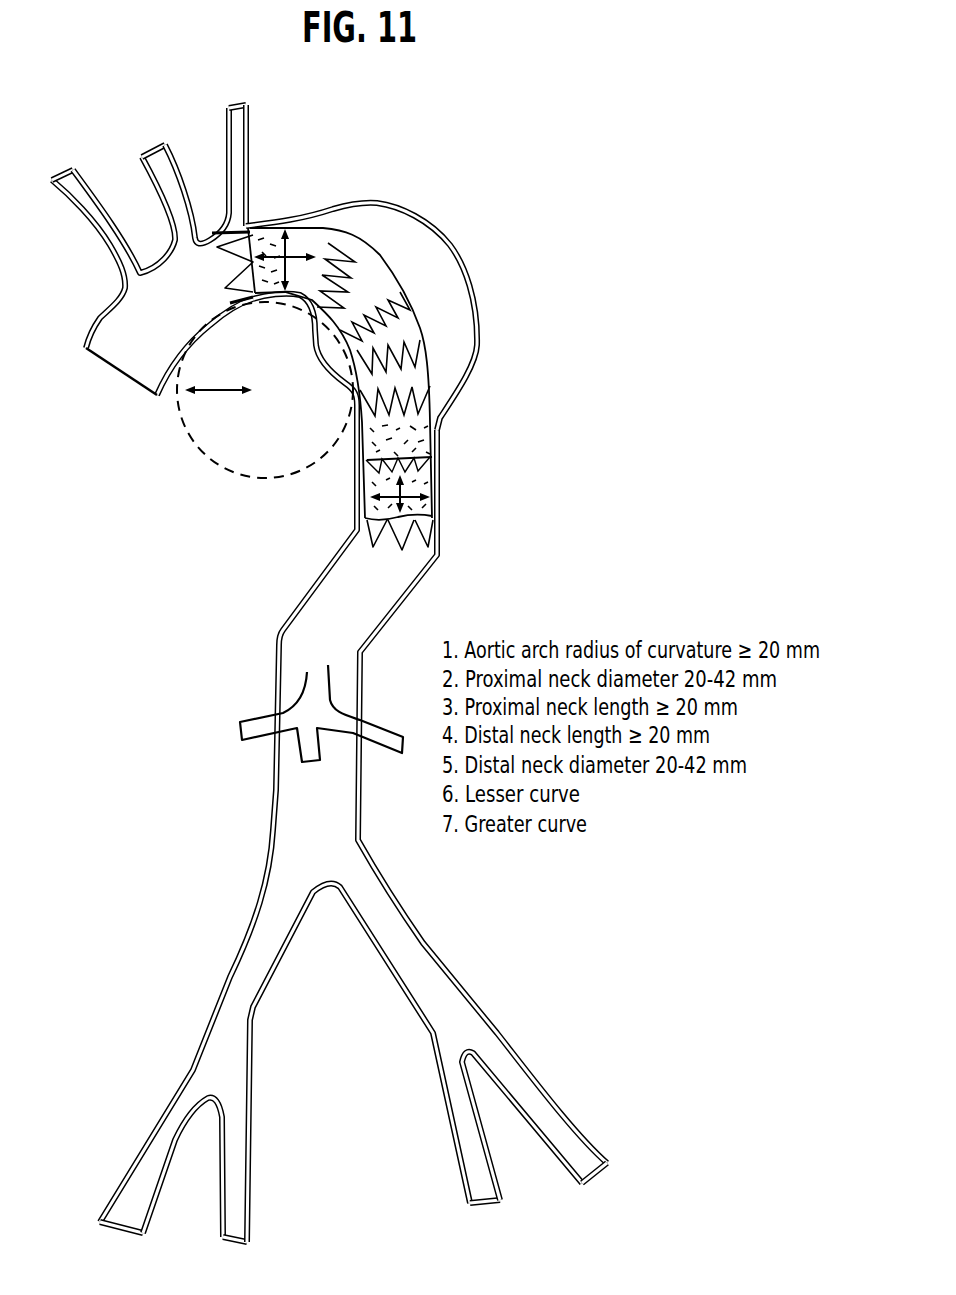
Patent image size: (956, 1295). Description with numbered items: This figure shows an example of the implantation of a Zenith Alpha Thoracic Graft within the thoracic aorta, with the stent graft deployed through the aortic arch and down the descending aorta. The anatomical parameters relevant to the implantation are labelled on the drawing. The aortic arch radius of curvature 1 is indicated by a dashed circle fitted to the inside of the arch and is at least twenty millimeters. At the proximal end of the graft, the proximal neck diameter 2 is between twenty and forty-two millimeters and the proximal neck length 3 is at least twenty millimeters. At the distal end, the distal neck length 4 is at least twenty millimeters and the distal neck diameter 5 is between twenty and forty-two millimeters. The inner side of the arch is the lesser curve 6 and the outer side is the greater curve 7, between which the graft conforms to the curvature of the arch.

The aortic arch radius of curvature 1 is at (265, 390).
The proximal neck diameter 2 is at (268, 242).
The proximal neck length 3 is at (290, 222).
The distal neck length 4 is at (416, 485).
The distal neck diameter 5 is at (417, 515).
The lesser curve 6 is at (305, 349).
The greater curve 7 is at (361, 316).